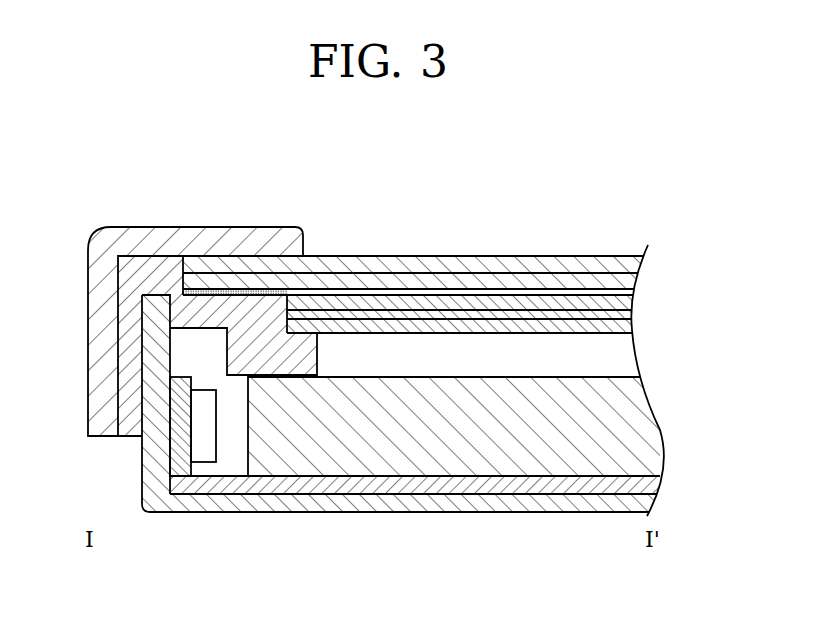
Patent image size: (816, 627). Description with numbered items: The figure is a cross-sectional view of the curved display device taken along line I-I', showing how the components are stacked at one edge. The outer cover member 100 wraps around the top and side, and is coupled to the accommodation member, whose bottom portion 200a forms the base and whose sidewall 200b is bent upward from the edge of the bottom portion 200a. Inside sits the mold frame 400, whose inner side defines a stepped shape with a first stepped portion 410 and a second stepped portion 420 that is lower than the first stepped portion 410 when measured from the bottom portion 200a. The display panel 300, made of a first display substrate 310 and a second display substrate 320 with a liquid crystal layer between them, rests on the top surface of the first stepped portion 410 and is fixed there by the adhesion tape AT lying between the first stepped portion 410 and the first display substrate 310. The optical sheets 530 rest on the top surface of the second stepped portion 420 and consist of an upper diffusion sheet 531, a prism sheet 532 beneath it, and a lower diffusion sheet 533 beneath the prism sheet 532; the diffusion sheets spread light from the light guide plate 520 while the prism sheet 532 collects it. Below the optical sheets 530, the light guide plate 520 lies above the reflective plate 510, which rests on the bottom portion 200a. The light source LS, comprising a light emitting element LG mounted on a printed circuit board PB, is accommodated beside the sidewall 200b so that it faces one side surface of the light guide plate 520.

The cover member 100 is at (97, 342).
The bottom portion 200a is at (645, 502).
The sidewall 200b is at (155, 452).
The display panel 300 is at (483, 274).
The first display substrate 310 is at (640, 278).
The second display substrate 320 is at (642, 262).
The mold frame 400 is at (137, 283).
The first stepped portion 410 is at (255, 300).
The second stepped portion 420 is at (302, 337).
The reflective plate 510 is at (640, 485).
The light guide plate 520 is at (650, 423).
The optical sheets 530 is at (535, 325).
The upper diffusion sheet 531 is at (633, 298).
The prism sheet 532 is at (633, 312).
The lower diffusion sheet 533 is at (633, 327).
The adhesion tape AT is at (267, 293).
The printed circuit board PB is at (180, 467).
The light emitting element LG is at (205, 452).
The light source LS is at (200, 489).